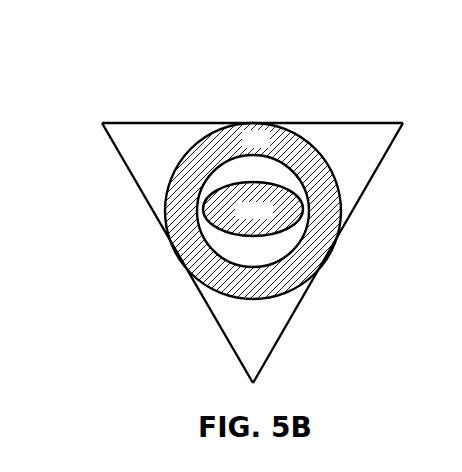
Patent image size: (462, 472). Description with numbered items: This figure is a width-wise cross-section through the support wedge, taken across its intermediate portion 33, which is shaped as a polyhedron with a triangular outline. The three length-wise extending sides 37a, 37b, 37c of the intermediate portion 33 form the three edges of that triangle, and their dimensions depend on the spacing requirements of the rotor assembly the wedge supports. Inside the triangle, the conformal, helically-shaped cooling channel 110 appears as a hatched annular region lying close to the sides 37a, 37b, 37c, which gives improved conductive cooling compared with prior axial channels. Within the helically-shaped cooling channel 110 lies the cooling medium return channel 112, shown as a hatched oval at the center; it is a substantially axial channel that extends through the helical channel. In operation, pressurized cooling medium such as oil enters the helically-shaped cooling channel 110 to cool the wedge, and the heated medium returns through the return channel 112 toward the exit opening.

The intermediate portion 33 is at (124, 68).
The length-wise extending side 37a is at (168, 121).
The length-wise extending side 37b is at (294, 313).
The length-wise extending side 37c is at (212, 313).
The helically-shaped cooling channel 110 is at (283, 143).
The cooling medium return channel 112 is at (283, 197).